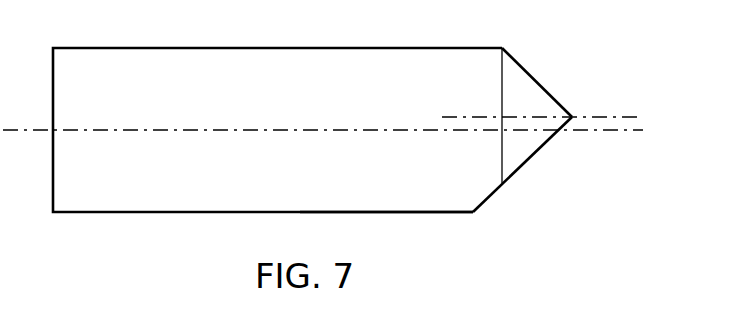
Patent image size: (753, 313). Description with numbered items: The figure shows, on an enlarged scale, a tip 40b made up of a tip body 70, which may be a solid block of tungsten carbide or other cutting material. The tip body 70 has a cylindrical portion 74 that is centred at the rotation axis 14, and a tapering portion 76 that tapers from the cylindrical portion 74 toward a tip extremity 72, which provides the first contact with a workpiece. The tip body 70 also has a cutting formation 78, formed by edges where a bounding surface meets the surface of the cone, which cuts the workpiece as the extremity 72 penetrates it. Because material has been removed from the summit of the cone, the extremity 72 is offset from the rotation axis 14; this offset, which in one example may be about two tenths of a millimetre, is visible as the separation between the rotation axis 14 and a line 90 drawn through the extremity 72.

The rotation axis 14 is at (2, 131).
The tip 40b is at (184, 247).
The tip body 70 is at (272, 78).
The tip extremity 72 is at (572, 116).
The cylindrical portion 74 is at (393, 213).
The tapering portion 76 is at (523, 84).
The cutting formation 78 is at (527, 161).
The line through the extremity 90 is at (622, 115).